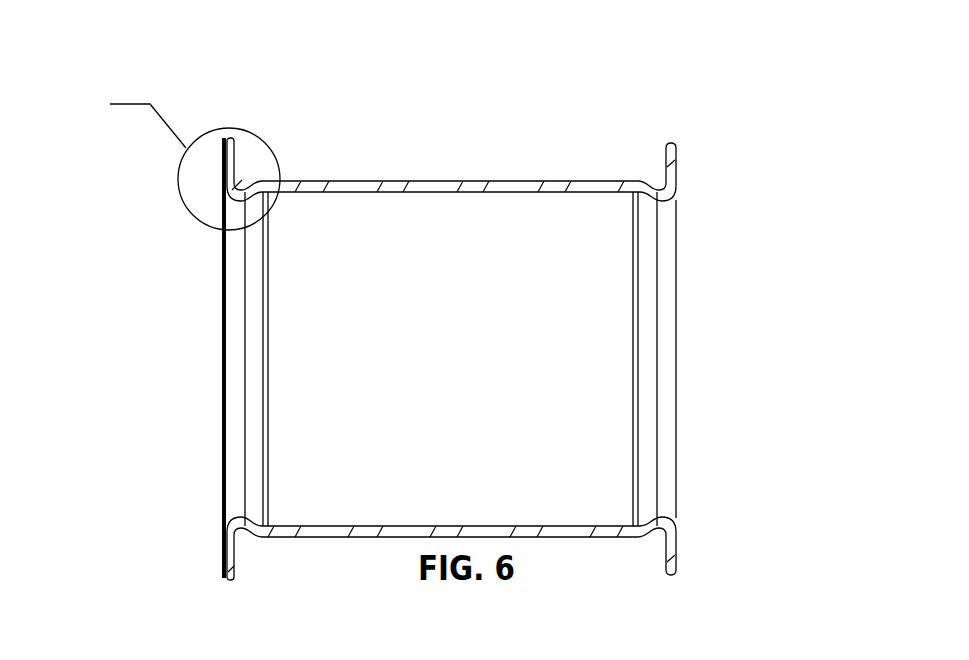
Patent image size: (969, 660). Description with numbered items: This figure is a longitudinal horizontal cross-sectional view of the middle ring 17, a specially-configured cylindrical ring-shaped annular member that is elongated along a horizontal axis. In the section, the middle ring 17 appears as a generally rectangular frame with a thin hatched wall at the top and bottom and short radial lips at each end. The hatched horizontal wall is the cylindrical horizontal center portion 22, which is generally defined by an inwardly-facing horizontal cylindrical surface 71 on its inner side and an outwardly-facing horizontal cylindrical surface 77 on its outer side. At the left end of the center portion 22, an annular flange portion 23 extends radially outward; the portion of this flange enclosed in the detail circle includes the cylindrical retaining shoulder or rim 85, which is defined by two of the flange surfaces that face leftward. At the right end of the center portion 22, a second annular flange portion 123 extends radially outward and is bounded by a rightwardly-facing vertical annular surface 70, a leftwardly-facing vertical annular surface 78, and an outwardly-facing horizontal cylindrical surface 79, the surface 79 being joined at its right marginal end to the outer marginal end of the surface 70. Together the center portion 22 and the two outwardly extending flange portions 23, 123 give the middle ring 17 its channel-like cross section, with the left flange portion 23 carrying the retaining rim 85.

The middle ring 17 is at (448, 136).
The center portion 22 is at (448, 205).
The annular flange portion 23 is at (186, 183).
The rightwardly-facing vertical annular surface 70 is at (677, 174).
The inwardly-facing horizontal cylindrical surface 71 is at (595, 193).
The outwardly-facing horizontal cylindrical surface 77 is at (545, 181).
The leftwardly-facing vertical annular surface 78 is at (665, 158).
The outwardly-facing horizontal cylindrical surface 79 is at (672, 143).
The retaining shoulder 85 is at (216, 129).
The annular flange portion 123 is at (701, 154).